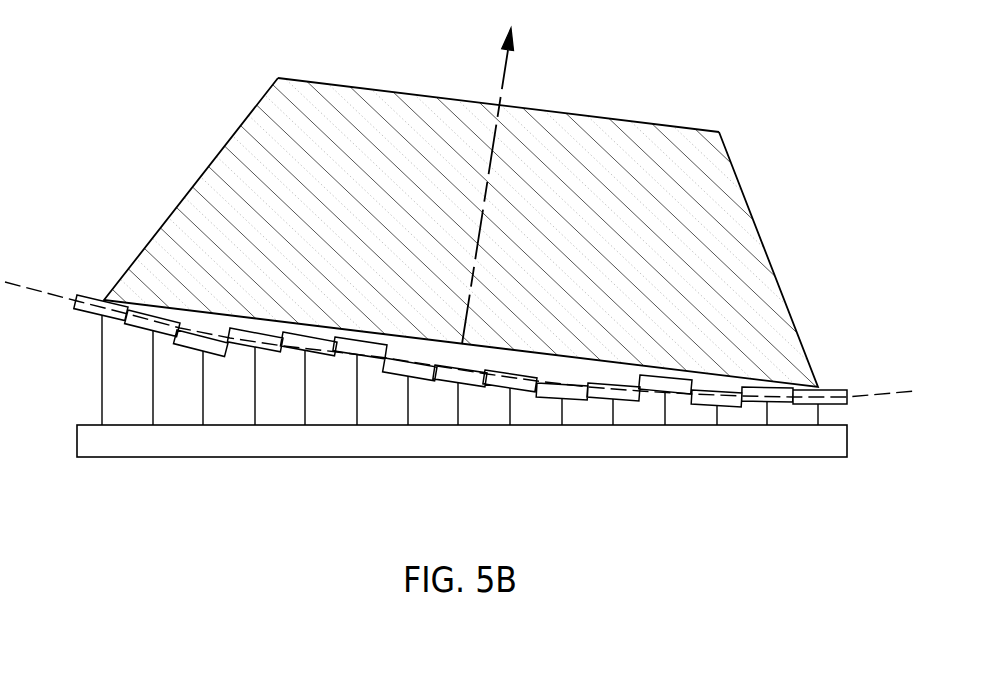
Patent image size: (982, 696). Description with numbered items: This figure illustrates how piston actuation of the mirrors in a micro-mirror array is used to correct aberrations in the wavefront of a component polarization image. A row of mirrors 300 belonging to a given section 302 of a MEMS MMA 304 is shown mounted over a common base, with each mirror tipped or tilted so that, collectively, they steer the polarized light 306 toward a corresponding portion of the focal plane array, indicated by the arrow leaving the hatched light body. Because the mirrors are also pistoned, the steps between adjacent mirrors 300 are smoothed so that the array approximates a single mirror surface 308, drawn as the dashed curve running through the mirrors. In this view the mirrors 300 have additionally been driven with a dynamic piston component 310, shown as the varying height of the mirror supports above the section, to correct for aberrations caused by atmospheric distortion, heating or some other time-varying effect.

The mirrors 300 is at (102, 302).
The section 302 is at (848, 472).
The MEMS MMA 304 is at (131, 155).
The polarized light 306 is at (590, 116).
The single mirror surface 308 is at (863, 397).
The dynamic piston component 310 is at (83, 316).